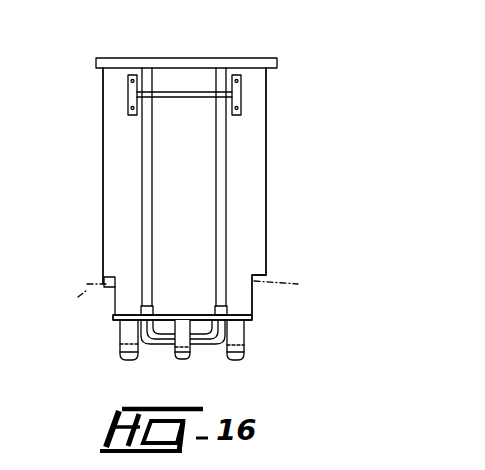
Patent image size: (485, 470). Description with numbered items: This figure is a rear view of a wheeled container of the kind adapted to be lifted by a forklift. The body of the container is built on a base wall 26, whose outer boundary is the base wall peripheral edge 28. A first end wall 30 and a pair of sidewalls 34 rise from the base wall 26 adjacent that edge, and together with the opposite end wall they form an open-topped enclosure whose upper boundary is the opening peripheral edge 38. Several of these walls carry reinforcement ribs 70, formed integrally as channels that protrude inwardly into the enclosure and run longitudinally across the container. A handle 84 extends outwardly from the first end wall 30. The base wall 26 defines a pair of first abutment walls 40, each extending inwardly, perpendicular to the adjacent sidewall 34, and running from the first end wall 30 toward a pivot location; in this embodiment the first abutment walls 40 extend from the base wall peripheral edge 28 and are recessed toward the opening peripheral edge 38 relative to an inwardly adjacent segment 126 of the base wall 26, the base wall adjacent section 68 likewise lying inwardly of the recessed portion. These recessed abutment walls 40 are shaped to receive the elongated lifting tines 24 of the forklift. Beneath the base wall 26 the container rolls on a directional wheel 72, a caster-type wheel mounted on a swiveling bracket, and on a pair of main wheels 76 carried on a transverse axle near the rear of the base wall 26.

The opening peripheral edge 38 is at (176, 58).
The handle 84 is at (203, 94).
The first end wall 30 is at (253, 112).
The reinforcement ribs 70 is at (150, 167).
The sidewalls 34 is at (266, 207).
The first abutment walls 40 is at (116, 286).
The base wall peripheral edge 28 is at (268, 275).
The lifting tine 24 is at (182, 293).
The base wall adjacent section 68 is at (113, 303).
The inwardly adjacent segment 126 is at (113, 323).
The main wheels 76 is at (127, 361).
The directional wheel 72 is at (177, 360).
The base wall 26 is at (210, 344).